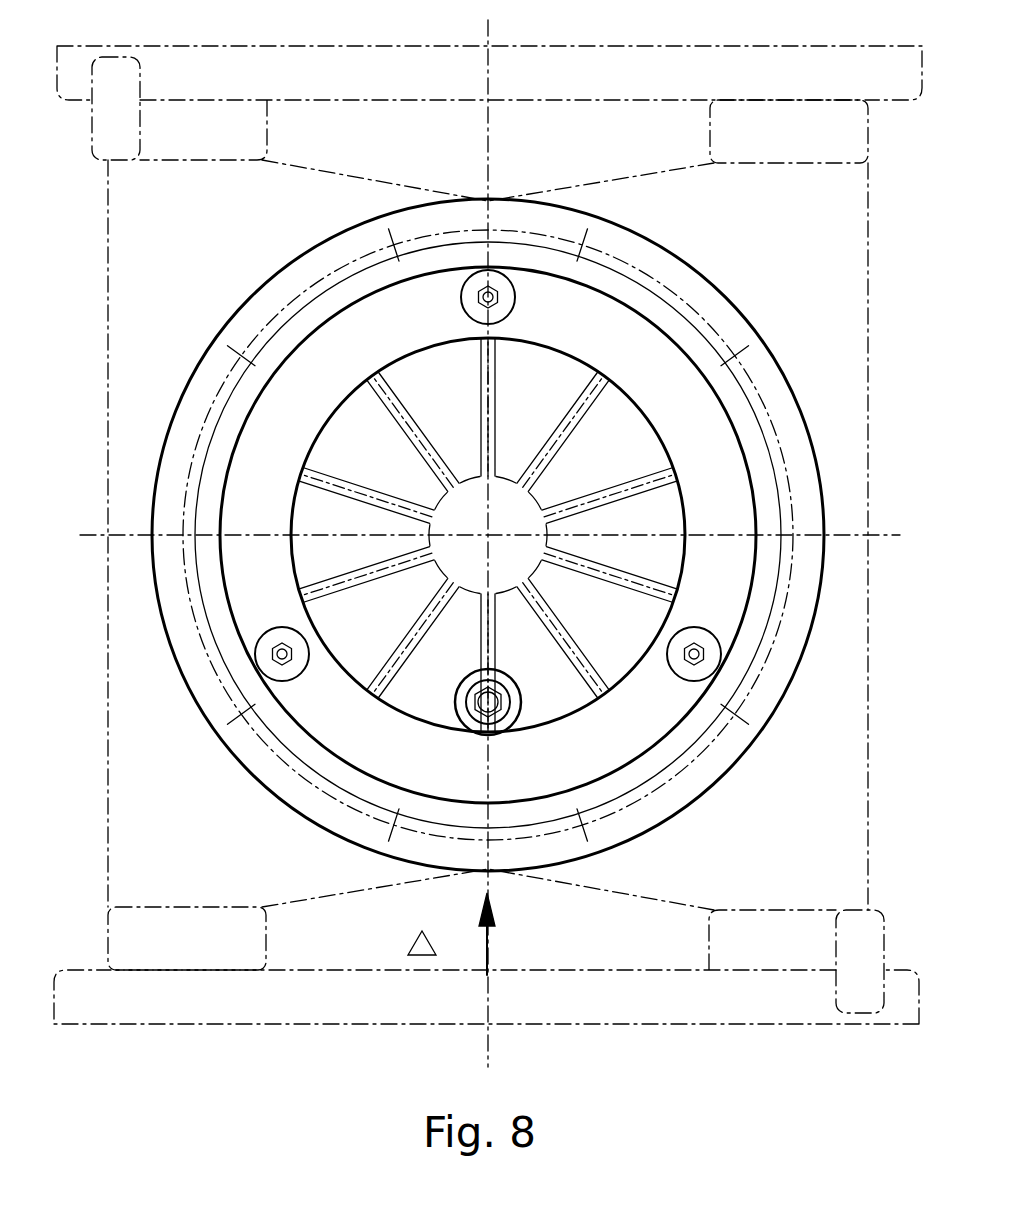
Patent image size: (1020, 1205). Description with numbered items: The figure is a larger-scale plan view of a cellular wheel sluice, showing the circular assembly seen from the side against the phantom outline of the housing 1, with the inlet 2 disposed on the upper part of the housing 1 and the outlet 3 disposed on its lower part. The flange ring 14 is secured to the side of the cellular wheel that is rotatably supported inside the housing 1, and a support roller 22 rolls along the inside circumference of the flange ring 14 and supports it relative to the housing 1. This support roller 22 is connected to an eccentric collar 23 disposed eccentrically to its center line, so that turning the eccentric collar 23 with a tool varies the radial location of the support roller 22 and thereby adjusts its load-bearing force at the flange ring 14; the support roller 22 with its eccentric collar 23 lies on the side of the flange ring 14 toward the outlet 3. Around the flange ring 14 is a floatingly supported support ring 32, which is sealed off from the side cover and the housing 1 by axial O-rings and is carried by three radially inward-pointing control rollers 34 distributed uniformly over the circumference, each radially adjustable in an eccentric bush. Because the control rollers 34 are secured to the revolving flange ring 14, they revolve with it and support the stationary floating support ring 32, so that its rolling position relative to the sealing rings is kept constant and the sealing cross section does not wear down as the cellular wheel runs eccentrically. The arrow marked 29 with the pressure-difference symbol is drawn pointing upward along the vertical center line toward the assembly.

The housing 1 is at (713, 317).
The inlet 2 is at (556, 82).
The outlet 3 is at (380, 1008).
The flange ring 14 is at (690, 427).
The support roller 22 is at (515, 712).
The eccentric collar 23 is at (473, 703).
The pressure direction arrow 29 is at (490, 934).
The support ring 32 is at (303, 323).
The control rollers 34 is at (507, 290).